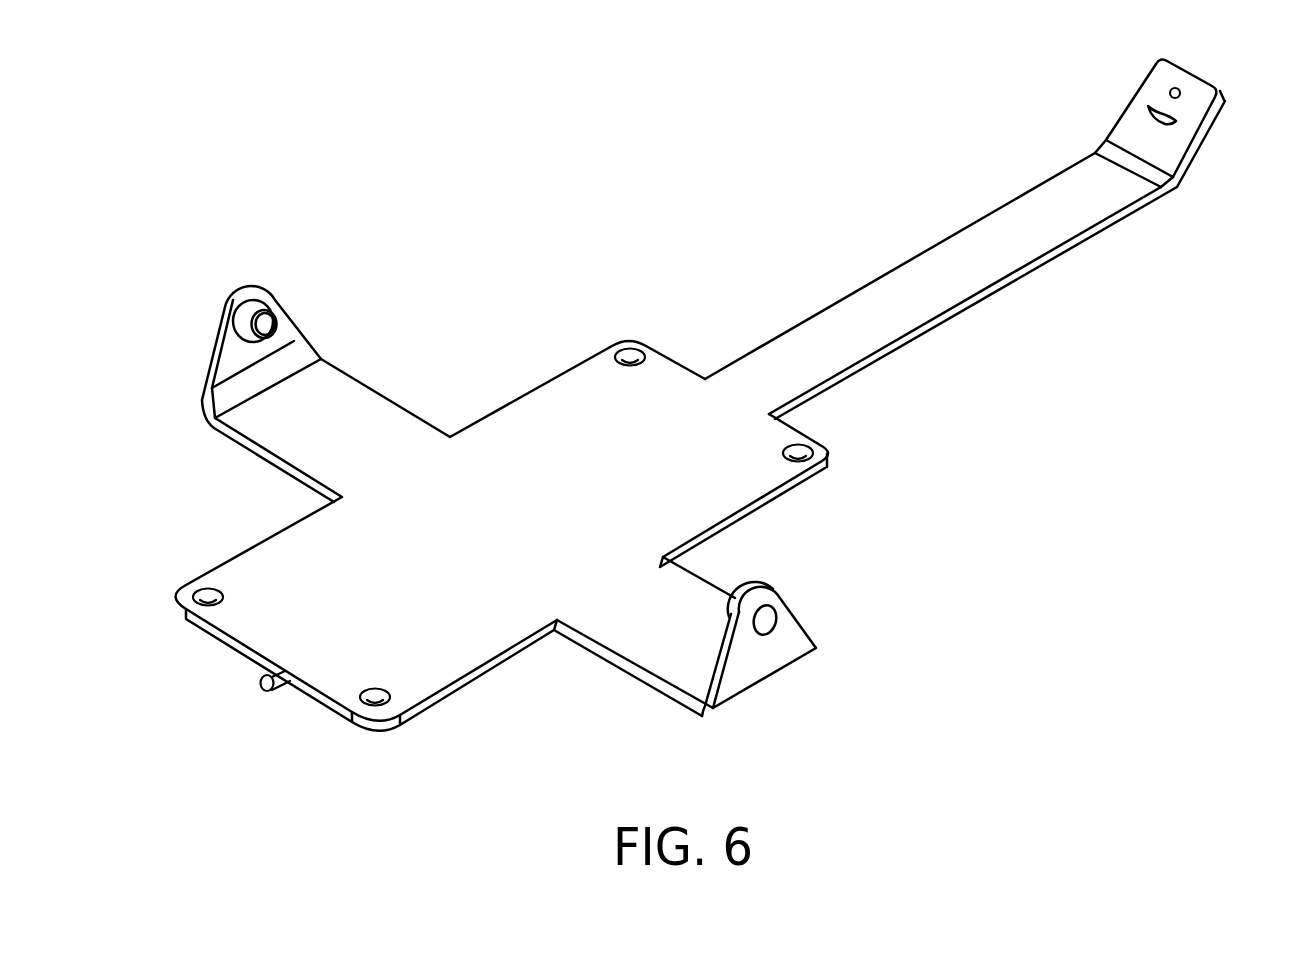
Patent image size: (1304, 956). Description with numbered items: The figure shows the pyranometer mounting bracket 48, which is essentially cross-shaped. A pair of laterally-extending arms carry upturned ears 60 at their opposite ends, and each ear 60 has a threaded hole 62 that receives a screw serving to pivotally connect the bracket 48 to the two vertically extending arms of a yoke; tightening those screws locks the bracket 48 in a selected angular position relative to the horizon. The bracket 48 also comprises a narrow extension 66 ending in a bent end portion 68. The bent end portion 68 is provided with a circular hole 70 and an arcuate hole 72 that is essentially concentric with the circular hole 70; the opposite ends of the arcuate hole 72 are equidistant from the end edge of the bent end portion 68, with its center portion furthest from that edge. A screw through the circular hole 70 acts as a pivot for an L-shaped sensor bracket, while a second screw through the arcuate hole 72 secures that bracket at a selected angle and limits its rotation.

The bracket 48 is at (554, 338).
The upturned ear 60 is at (237, 294).
The threaded hole 62 is at (275, 320).
The narrow extension 66 is at (950, 287).
The bent end portion 68 is at (1210, 137).
The circular hole 70 is at (1172, 88).
The arcuate hole 72 is at (1150, 108).